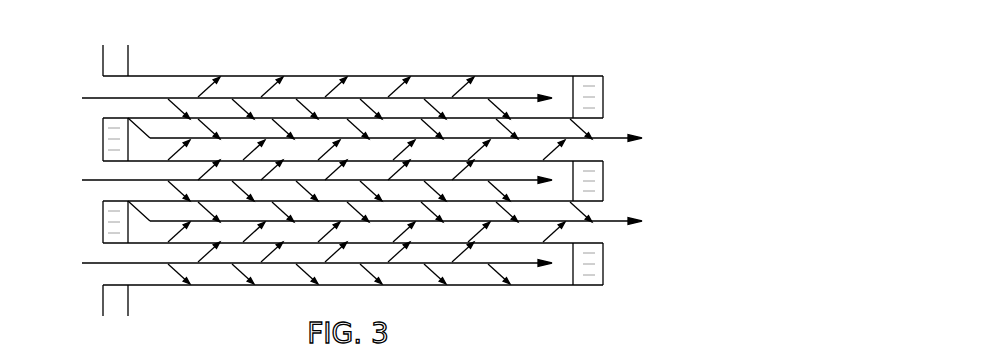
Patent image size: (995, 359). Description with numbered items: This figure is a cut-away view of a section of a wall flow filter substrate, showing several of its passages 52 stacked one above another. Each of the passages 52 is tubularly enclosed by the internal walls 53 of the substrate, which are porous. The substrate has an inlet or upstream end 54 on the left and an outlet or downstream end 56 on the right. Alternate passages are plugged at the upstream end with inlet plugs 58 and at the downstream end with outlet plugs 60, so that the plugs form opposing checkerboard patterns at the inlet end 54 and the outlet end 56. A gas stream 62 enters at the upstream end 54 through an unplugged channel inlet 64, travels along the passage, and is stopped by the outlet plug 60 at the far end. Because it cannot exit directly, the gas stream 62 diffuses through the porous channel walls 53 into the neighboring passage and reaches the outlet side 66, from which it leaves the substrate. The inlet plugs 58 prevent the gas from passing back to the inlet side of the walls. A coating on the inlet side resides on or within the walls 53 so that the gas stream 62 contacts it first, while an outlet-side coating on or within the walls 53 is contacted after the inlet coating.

The inlet end 54 is at (87, 44).
The outlet end 56 is at (617, 76).
The inlet plugs 58 is at (107, 62).
The gas stream 62 is at (155, 98).
The channel inlet 64 is at (105, 93).
The passages 52 is at (140, 118).
The internal walls 53 is at (330, 120).
The outlet plugs 60 is at (596, 97).
The outlet side 66 is at (580, 156).